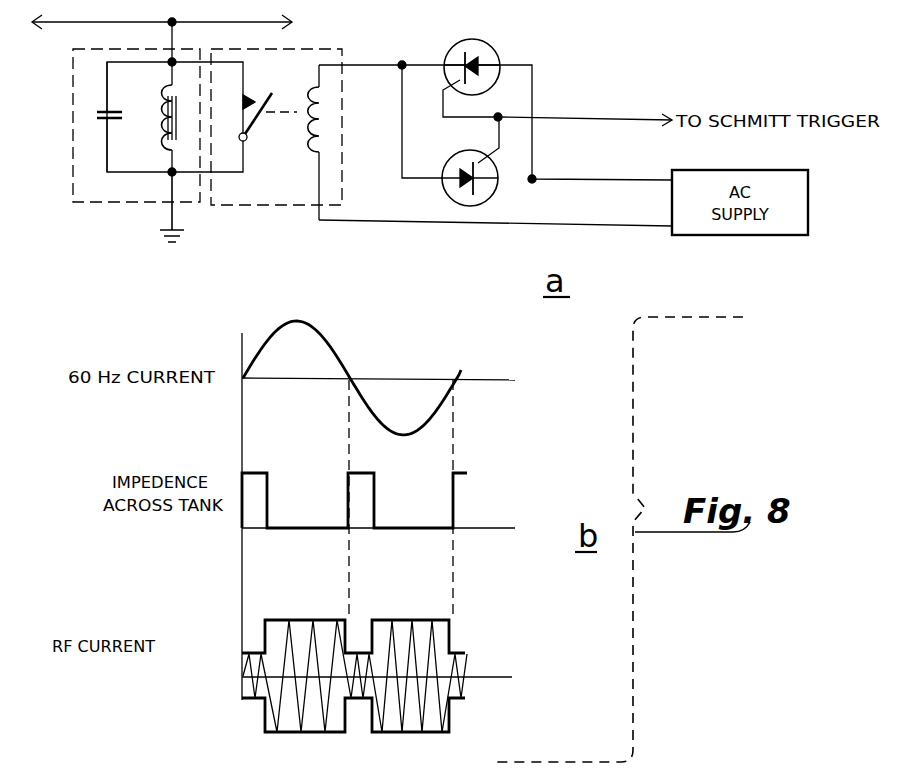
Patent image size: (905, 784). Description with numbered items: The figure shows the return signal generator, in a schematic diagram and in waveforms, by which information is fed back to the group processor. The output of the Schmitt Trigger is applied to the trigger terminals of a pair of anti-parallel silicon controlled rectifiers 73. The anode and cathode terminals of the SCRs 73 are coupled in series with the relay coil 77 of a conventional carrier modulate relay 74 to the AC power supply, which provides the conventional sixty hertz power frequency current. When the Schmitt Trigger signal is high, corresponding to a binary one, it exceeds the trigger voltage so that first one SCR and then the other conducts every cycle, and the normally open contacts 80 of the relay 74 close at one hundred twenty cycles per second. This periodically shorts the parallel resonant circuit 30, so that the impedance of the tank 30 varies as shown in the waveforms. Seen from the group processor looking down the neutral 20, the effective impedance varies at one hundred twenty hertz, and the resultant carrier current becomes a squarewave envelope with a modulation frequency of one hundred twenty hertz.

The neutral 20 is at (237, 23).
The parallel resonant circuit 30 is at (73, 95).
The anti-parallel silicon controlled rectifiers 73 is at (453, 53).
The carrier modulate relay 74 is at (294, 149).
The relay coil 77 is at (328, 107).
The normally open contacts 80 is at (263, 122).